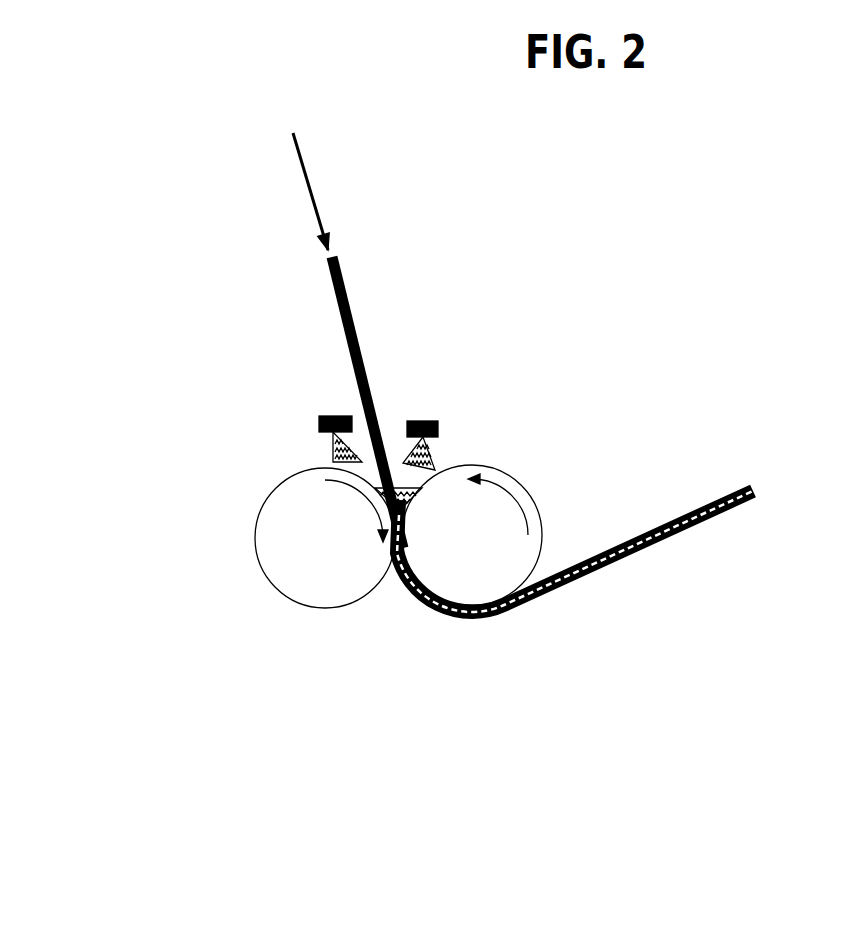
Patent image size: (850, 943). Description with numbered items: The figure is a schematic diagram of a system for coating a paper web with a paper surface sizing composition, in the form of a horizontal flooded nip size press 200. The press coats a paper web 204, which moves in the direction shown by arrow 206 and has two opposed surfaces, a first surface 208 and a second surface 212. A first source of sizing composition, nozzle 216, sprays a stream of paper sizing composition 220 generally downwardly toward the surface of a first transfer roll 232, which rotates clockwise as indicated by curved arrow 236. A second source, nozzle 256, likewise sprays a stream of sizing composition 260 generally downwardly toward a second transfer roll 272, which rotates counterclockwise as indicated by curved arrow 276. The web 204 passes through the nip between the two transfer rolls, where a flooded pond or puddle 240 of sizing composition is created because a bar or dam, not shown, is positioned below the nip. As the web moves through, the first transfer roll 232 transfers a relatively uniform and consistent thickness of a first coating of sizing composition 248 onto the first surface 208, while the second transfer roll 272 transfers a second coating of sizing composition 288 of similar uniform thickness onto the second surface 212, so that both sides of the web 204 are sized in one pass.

The horizontal flooded nip size press 200 is at (688, 217).
The paper web 204 is at (375, 272).
The arrow 206 is at (312, 188).
The first surface 208 is at (343, 327).
The second surface 212 is at (357, 330).
The nozzle 216 is at (320, 423).
The stream of paper sizing composition 220 is at (332, 453).
The first transfer roll 232 is at (278, 633).
The curved arrow 236 is at (362, 493).
The flooded pond 240 is at (403, 505).
The nozzle 256 is at (427, 425).
The stream of paper sizing composition 260 is at (437, 460).
The second transfer roll 272 is at (528, 457).
The curved arrow 276 is at (518, 505).
The second coating of sizing composition 288 is at (672, 515).
The first coating of sizing composition 248 is at (723, 513).